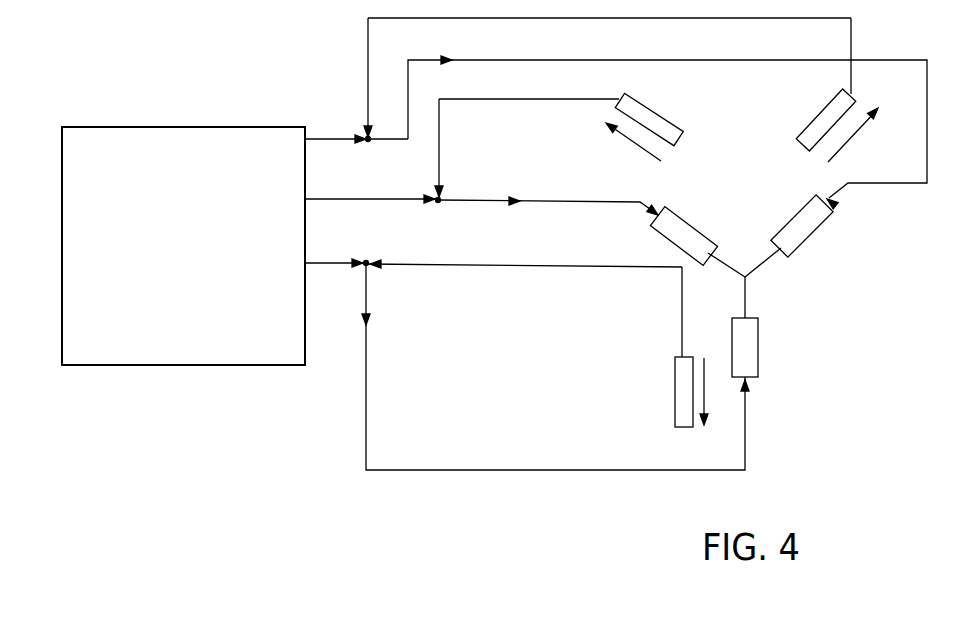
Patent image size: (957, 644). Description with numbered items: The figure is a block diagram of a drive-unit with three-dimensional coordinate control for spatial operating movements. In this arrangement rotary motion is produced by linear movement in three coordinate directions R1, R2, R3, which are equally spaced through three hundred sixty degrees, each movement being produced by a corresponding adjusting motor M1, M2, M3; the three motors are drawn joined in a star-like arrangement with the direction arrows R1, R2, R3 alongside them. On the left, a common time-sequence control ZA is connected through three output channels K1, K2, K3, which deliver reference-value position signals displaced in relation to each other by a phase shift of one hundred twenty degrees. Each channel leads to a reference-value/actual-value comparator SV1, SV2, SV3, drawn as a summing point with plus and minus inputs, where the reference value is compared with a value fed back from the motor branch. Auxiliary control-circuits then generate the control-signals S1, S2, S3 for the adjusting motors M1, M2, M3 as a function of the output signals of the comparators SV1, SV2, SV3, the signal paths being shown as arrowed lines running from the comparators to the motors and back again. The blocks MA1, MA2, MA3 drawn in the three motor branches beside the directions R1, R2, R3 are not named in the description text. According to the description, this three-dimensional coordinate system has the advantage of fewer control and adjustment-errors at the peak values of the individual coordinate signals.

The common time-sequence control ZA is at (200, 277).
The output channel K1 is at (371, 185).
The output channel K2 is at (336, 127).
The output channel K3 is at (336, 251).
The reference-value/actual-value comparator SV1 is at (428, 181).
The reference-value/actual-value comparator SV2 is at (392, 125).
The reference-value/actual-value comparator SV3 is at (392, 249).
The control-signal S1 is at (549, 216).
The control-signal S2 is at (667, 117).
The control-signal S3 is at (555, 366).
The measuring element 1 MA1 is at (570, 114).
The measuring element 2 MA2 is at (818, 84).
The measuring element 3 MA3 is at (661, 347).
The adjusting motor M1 is at (697, 237).
The adjusting motor M2 is at (798, 236).
The adjusting motor M3 is at (767, 327).
The coordinate direction R1 is at (632, 151).
The coordinate direction R2 is at (856, 137).
The coordinate direction R3 is at (719, 393).